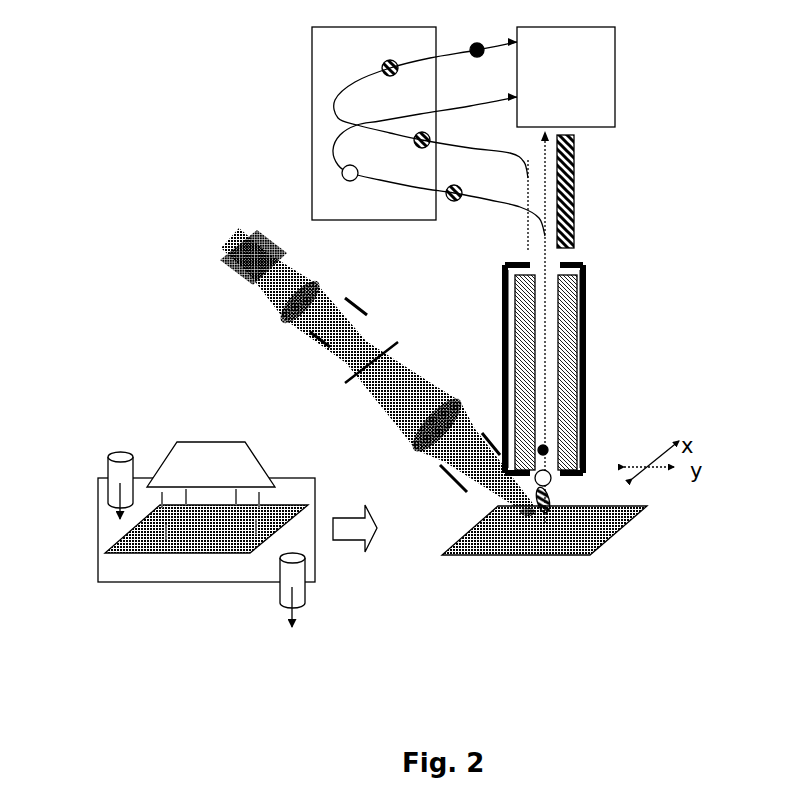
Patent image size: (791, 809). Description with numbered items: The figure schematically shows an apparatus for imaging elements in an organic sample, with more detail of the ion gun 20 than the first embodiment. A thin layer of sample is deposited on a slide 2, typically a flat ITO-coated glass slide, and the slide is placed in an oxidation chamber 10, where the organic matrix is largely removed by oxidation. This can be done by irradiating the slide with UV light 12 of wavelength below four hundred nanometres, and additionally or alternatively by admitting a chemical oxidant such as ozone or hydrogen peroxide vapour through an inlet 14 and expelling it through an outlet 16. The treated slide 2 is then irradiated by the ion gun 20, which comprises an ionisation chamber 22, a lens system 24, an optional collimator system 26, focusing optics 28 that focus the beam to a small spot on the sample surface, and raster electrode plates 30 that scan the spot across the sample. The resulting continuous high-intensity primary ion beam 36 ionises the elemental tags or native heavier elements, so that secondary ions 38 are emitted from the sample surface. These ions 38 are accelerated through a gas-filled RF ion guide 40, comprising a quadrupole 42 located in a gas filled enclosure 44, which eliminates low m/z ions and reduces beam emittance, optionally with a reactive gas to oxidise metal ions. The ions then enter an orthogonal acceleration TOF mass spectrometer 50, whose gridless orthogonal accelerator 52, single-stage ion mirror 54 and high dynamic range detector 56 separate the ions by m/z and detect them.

The slide 2 is at (185, 548).
The oxidation chamber 10 is at (98, 570).
The UV light 12 is at (200, 442).
The inlet 14 is at (112, 457).
The outlet 16 is at (305, 600).
The ion gun 20 is at (280, 337).
The ionisation chamber 22 is at (220, 258).
The lens system 24 is at (330, 290).
The collimator system 26 is at (345, 380).
The focusing optics 28 is at (410, 447).
The raster electrode plates 30 is at (445, 490).
The primary ion beam 36 is at (527, 513).
The secondary ions 38 is at (550, 490).
The RF ion guide 40 is at (603, 310).
The quadrupole 42 is at (587, 355).
The gas filled enclosure 44 is at (587, 392).
The TOF mass spectrometer 50 is at (650, 145).
The orthogonal accelerator 52 is at (577, 198).
The ion mirror 54 is at (312, 100).
The detector 56 is at (615, 43).